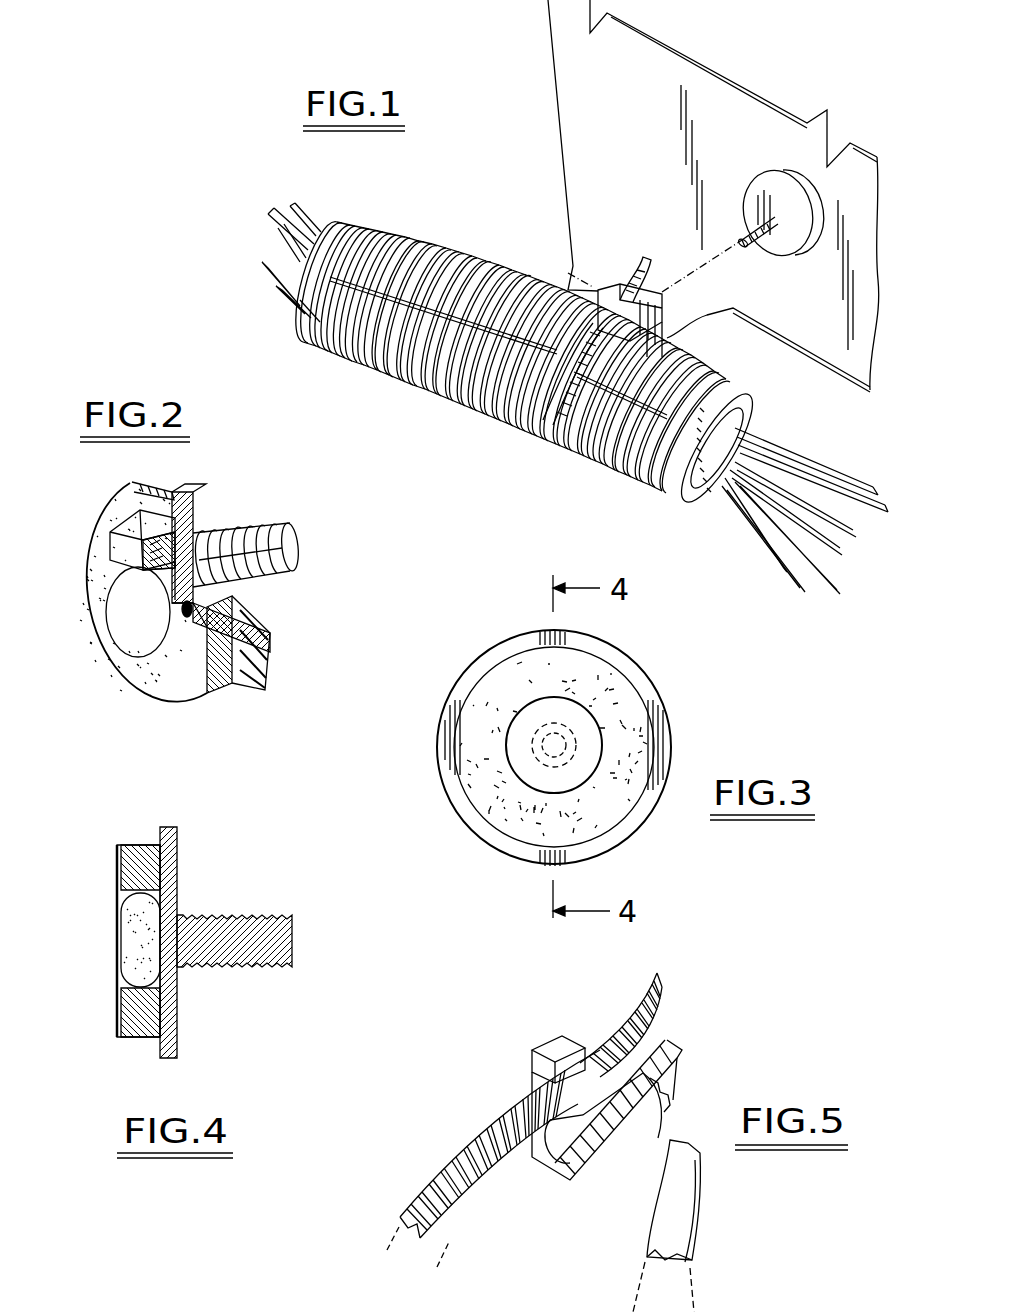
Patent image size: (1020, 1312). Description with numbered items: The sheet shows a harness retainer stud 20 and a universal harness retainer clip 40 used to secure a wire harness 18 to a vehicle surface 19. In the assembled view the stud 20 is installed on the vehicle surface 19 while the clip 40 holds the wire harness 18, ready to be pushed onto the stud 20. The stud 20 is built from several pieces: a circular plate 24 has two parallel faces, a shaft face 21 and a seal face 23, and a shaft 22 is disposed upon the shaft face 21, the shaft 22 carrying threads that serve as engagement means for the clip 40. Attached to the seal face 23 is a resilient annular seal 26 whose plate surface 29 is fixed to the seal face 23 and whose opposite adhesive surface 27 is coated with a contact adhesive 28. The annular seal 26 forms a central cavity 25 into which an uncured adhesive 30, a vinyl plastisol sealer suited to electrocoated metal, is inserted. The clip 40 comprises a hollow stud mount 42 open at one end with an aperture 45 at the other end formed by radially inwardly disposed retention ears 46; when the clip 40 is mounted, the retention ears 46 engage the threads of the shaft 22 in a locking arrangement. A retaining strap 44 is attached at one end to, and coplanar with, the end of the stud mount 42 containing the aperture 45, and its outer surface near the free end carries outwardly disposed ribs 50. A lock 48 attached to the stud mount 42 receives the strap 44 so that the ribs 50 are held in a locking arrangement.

In FIG. 1, the wire harness 18 is at (483, 400).
In FIG. 1, the vehicle surface 19 is at (583, 168).
In FIG. 1, the harness retainer stud 20 is at (788, 152).
In FIG. 2, the harness retainer stud 20 is at (193, 608).
In FIG. 2, the shaft face 21 is at (265, 625).
In FIG. 4, the shaft face 21 is at (175, 870).
In FIG. 2, the shaft 22 is at (282, 546).
In FIG. 4, the shaft 22 is at (292, 940).
In FIG. 2, the seal face 23 is at (215, 700).
In FIG. 3, the seal face 23 is at (620, 652).
In FIG. 4, the seal face 23 is at (150, 835).
In FIG. 2, the circular plate 24 is at (197, 498).
In FIG. 3, the circular plate 24 is at (668, 712).
In FIG. 4, the circular plate 24 is at (168, 828).
In FIG. 2, the central cavity 25 is at (138, 645).
In FIG. 3, the central cavity 25 is at (580, 782).
In FIG. 4, the central cavity 25 is at (112, 908).
In FIG. 2, the resilient annular seal 26 is at (232, 660).
In FIG. 3, the resilient annular seal 26 is at (635, 680).
In FIG. 4, the resilient annular seal 26 is at (137, 1040).
In FIG. 2, the adhesive surface 27 is at (140, 545).
In FIG. 4, the adhesive surface 27 is at (118, 1010).
In FIG. 2, the contact adhesive 28 is at (97, 626).
In FIG. 3, the contact adhesive 28 is at (497, 799).
In FIG. 4, the contact adhesive 28 is at (115, 920).
In FIG. 2, the plate surface 29 is at (175, 545).
In FIG. 4, the plate surface 29 is at (160, 1008).
In FIG. 2, the uncured adhesive 30 is at (192, 609).
In FIG. 3, the uncured adhesive 30 is at (592, 750).
In FIG. 4, the uncured adhesive 30 is at (130, 945).
In FIG. 1, the universal harness retainer clip 40 is at (550, 437).
In FIG. 5, the universal harness retainer clip 40 is at (583, 1142).
In FIG. 5, the stud mount 42 is at (683, 1050).
In FIG. 5, the retaining strap 44 is at (703, 1200).
In FIG. 5, the aperture 45 is at (662, 1093).
In FIG. 5, the retention ears 46 is at (643, 1090).
In FIG. 5, the lock 48 is at (563, 1048).
In FIG. 5, the ribs 50 is at (480, 1135).